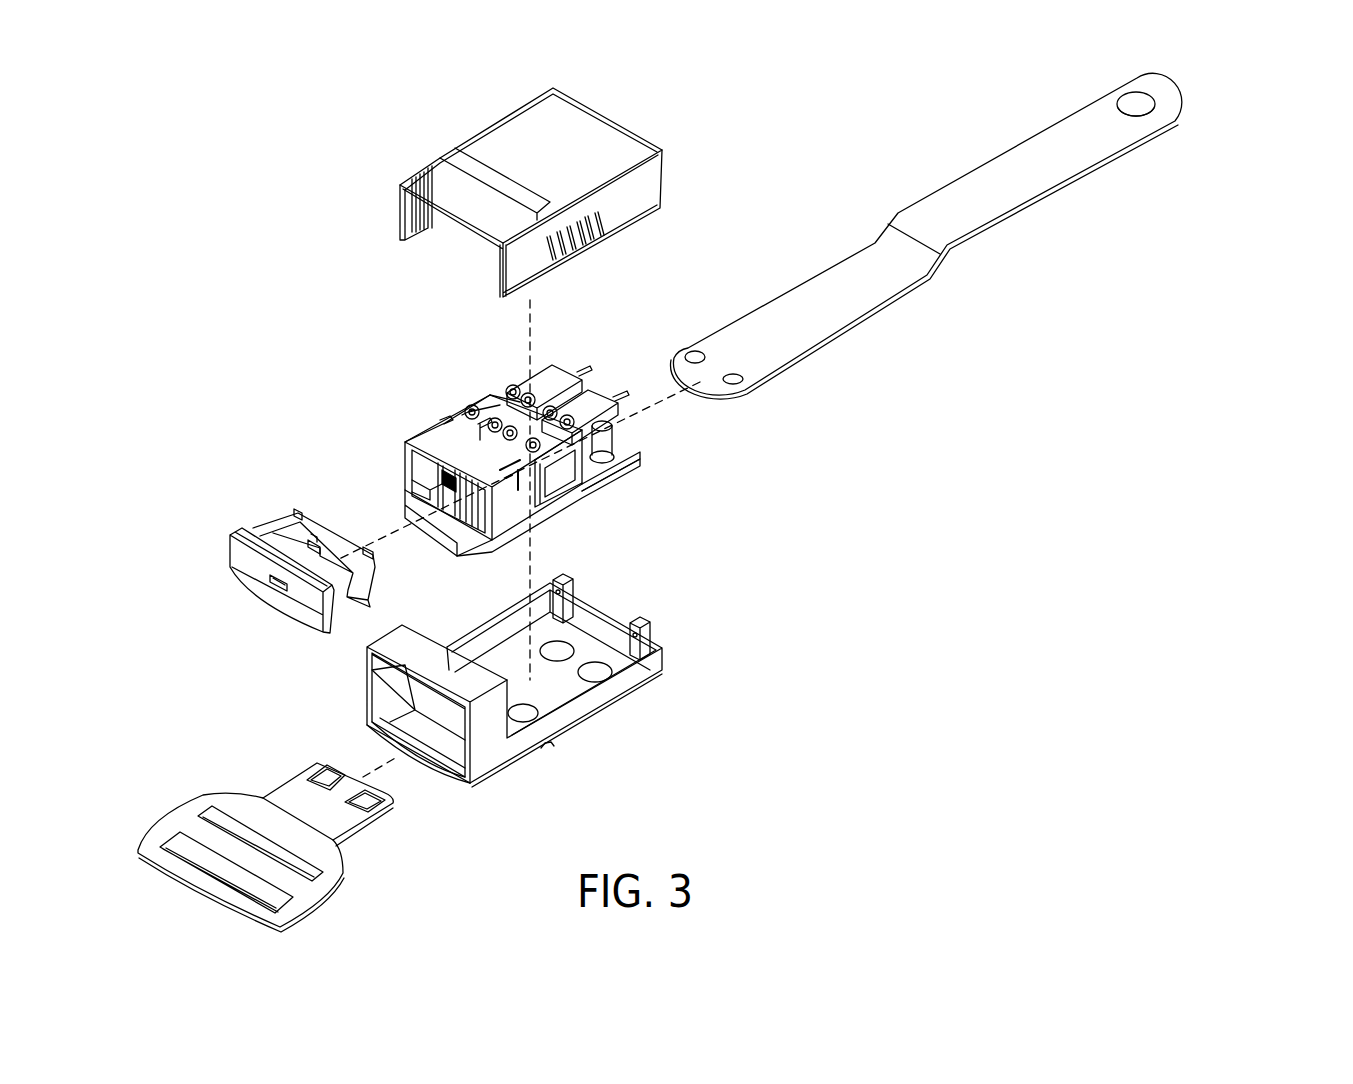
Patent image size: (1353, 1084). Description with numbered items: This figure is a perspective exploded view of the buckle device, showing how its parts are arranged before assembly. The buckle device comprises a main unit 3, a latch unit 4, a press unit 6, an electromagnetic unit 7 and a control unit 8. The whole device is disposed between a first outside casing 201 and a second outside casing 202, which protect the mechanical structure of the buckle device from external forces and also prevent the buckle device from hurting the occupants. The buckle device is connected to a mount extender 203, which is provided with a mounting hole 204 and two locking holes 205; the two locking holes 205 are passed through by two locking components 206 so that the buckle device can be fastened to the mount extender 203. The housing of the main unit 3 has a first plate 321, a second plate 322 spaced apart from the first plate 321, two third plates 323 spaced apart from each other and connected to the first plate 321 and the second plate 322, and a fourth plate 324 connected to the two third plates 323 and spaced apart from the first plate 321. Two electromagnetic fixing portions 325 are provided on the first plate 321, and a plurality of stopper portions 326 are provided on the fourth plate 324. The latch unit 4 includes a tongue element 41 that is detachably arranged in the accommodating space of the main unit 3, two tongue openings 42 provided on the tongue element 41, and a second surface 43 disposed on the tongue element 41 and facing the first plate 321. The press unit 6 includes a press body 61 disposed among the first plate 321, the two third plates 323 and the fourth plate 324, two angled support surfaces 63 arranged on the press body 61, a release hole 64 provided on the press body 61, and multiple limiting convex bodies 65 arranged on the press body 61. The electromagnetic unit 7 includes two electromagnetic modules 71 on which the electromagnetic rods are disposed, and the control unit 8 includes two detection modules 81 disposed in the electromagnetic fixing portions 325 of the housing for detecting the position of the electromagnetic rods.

The main unit 3 is at (356, 352).
The latch unit 4 is at (157, 782).
The press unit 6 is at (206, 497).
The electromagnetic unit 7 is at (682, 558).
The control unit 8 is at (638, 306).
The tongue element 41 is at (325, 880).
The tongue openings 42 is at (325, 778).
The second surface 43 is at (293, 797).
The press body 61 is at (240, 555).
The angled support surfaces 63 is at (360, 598).
The release hole 64 is at (276, 588).
The limiting convex bodies 65 is at (294, 509).
The electromagnetic modules 71 is at (550, 465).
The detection modules 81 is at (560, 367).
The first outside casing 201 is at (622, 690).
The second outside casing 202 is at (430, 170).
The mount extender 203 is at (977, 185).
The mounting hole 204 is at (1155, 98).
The locking holes 205 is at (697, 352).
The locking components 206 is at (620, 437).
The first plate 321 is at (643, 460).
The second plate 322 is at (645, 470).
The third plates 323 is at (517, 522).
The fourth plate 324 is at (408, 438).
The electromagnetic fixing portions 325 is at (495, 407).
The stopper portions 326 is at (438, 430).